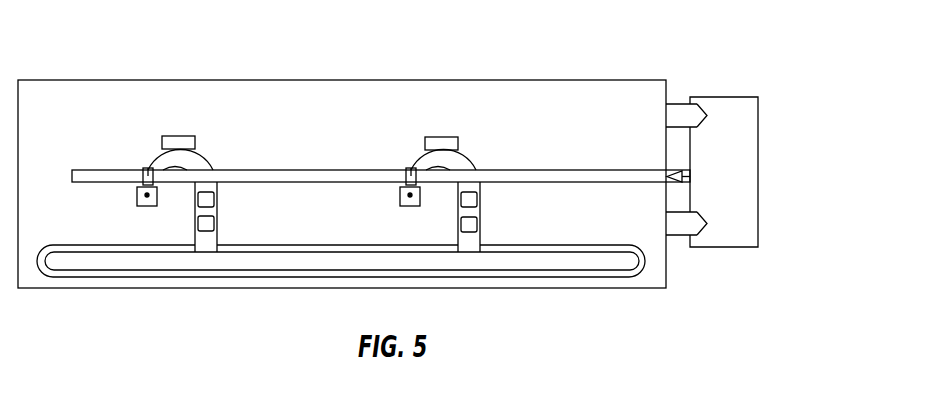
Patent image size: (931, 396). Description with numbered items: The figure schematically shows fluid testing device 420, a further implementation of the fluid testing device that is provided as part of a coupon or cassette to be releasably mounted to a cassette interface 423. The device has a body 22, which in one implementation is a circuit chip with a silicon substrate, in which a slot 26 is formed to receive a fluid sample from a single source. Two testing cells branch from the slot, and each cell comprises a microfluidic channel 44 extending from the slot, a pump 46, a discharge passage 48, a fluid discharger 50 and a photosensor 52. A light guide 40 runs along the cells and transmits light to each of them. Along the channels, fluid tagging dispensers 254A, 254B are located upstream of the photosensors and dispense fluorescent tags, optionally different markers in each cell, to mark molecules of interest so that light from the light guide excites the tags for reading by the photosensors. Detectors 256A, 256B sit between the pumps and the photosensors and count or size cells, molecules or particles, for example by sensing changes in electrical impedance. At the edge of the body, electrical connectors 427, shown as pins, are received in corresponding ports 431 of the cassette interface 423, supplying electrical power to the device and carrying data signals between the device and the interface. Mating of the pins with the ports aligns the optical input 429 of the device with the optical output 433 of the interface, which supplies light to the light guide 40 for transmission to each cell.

The body 22 is at (228, 288).
The slot 26 is at (152, 277).
The light guide 40 is at (300, 170).
The microfluidic channel 44 is at (209, 166).
The pump 46 is at (215, 224).
The discharge passage 48 is at (137, 196).
The fluid discharger 50 is at (147, 197).
The photosensor 52 is at (148, 168).
The fluid tagging dispenser 254A is at (182, 136).
The fluid tagging dispenser 254B is at (440, 137).
The detector 256A is at (215, 198).
The detector 256B is at (478, 198).
The fluid testing device 420 is at (492, 297).
The cassette interface 423 is at (732, 97).
The electrical connector 427 is at (679, 104).
The optical input 429 is at (670, 172).
The port 431 is at (700, 104).
The optical output 433 is at (670, 184).